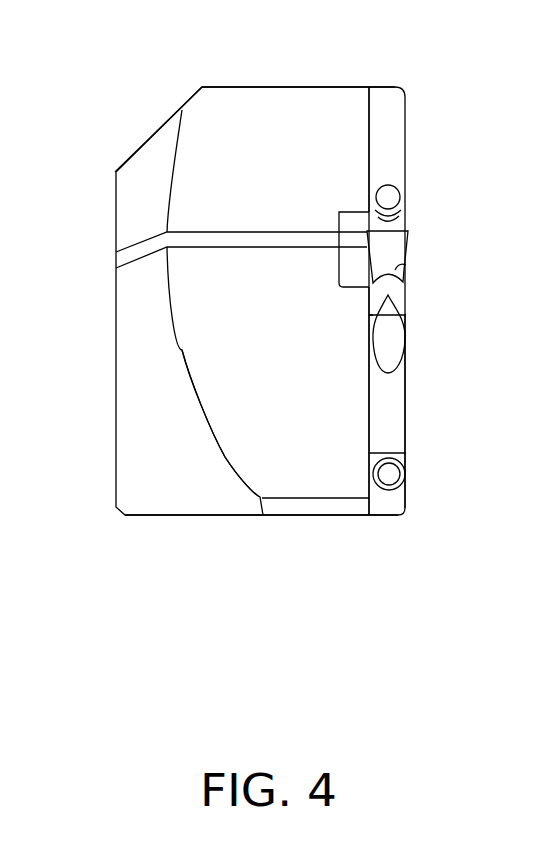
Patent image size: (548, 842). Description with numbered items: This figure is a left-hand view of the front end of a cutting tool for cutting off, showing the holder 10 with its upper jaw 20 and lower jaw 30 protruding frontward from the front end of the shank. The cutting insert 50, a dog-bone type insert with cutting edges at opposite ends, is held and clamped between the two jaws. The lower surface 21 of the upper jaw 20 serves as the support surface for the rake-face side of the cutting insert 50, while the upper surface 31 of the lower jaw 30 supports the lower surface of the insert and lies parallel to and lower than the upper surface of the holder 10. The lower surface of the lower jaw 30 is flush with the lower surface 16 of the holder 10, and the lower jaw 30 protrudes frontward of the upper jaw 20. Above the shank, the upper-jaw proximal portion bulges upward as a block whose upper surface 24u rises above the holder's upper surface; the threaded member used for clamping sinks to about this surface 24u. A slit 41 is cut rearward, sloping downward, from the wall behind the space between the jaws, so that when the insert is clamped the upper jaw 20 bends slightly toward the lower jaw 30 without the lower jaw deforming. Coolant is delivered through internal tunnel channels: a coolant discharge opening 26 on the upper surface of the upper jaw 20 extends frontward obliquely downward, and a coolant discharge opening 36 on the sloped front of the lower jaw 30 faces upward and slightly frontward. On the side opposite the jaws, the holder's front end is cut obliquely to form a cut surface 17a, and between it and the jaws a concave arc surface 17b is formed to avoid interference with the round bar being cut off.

The holder 10 is at (405, 90).
The upper jaw 20 is at (405, 147).
The upper surface of the upper-jaw proximal portion 24u is at (225, 87).
The cut surface 17a is at (143, 217).
The arc surface 17b is at (275, 413).
The slit 41 is at (243, 238).
The lower surface of the holder 16 is at (322, 515).
The coolant discharge opening 26 is at (403, 193).
The lower surface of the upper jaw 21 is at (405, 222).
The cutting insert 50 is at (410, 243).
The upper surface of the lower jaw 31 is at (406, 268).
The coolant discharge opening 36 is at (387, 373).
The lower jaw 30 is at (407, 412).